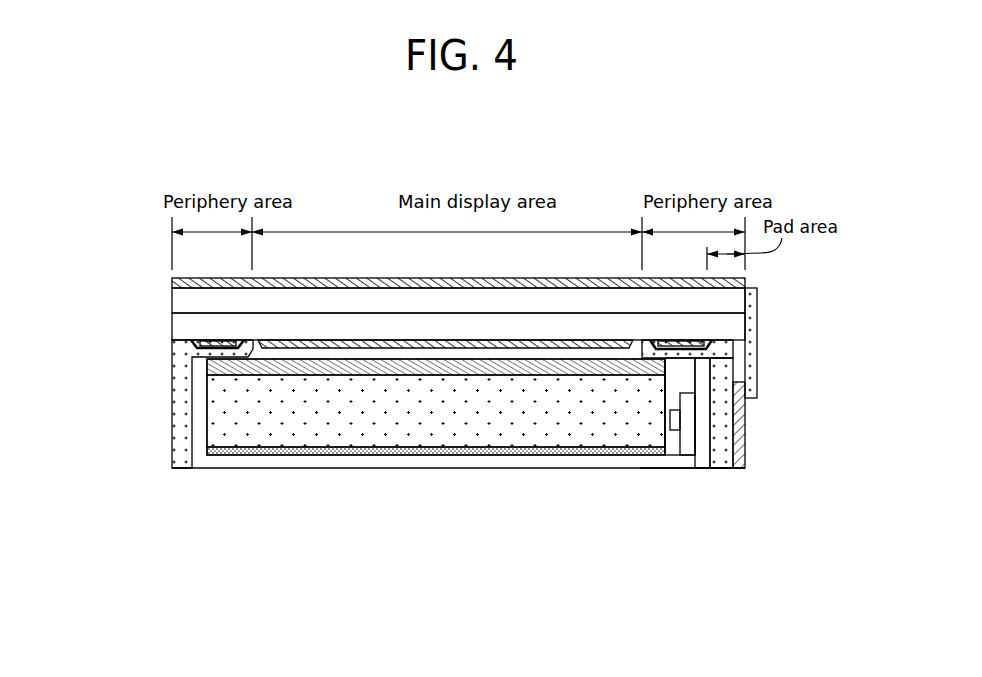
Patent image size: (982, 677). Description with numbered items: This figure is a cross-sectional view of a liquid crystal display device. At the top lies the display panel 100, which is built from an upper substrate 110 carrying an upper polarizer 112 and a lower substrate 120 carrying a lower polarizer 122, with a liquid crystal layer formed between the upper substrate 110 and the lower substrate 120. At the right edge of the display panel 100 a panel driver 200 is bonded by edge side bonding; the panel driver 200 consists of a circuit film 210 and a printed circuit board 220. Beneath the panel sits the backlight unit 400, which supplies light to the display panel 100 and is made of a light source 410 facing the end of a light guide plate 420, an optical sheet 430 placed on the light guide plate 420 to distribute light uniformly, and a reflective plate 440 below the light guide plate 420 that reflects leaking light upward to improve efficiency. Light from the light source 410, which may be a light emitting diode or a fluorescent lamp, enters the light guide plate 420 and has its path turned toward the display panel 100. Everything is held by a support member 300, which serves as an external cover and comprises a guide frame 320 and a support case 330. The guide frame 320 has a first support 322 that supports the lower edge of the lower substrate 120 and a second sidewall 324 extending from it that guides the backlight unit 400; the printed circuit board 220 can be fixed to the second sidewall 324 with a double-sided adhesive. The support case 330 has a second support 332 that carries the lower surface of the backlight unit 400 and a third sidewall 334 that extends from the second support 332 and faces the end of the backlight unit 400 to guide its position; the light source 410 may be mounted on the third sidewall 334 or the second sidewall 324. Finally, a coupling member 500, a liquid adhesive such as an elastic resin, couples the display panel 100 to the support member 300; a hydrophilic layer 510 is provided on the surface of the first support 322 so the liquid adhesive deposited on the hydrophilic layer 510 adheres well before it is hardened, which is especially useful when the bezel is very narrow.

The display panel 100 is at (393, 314).
The upper substrate 110 is at (178, 303).
The upper polarizer 112 is at (172, 284).
The lower substrate 120 is at (178, 325).
The lower polarizer 122 is at (278, 340).
The panel driver 200 is at (811, 378).
The circuit film 210 is at (757, 355).
The printed circuit board 220 is at (745, 422).
The support member 300 is at (476, 479).
The guide frame 320 is at (711, 458).
The first support 322 is at (683, 356).
The second sidewall 324 is at (735, 425).
The support case 330 is at (684, 467).
The second support 332 is at (645, 468).
The third sidewall 334 is at (703, 445).
The backlight unit 400 is at (443, 471).
The light source 410 is at (670, 420).
The light guide plate 420 is at (360, 432).
The optical sheet 430 is at (313, 368).
The reflective plate 440 is at (398, 452).
The coupling member 500 is at (209, 341).
The hydrophilic layer 510 is at (200, 348).